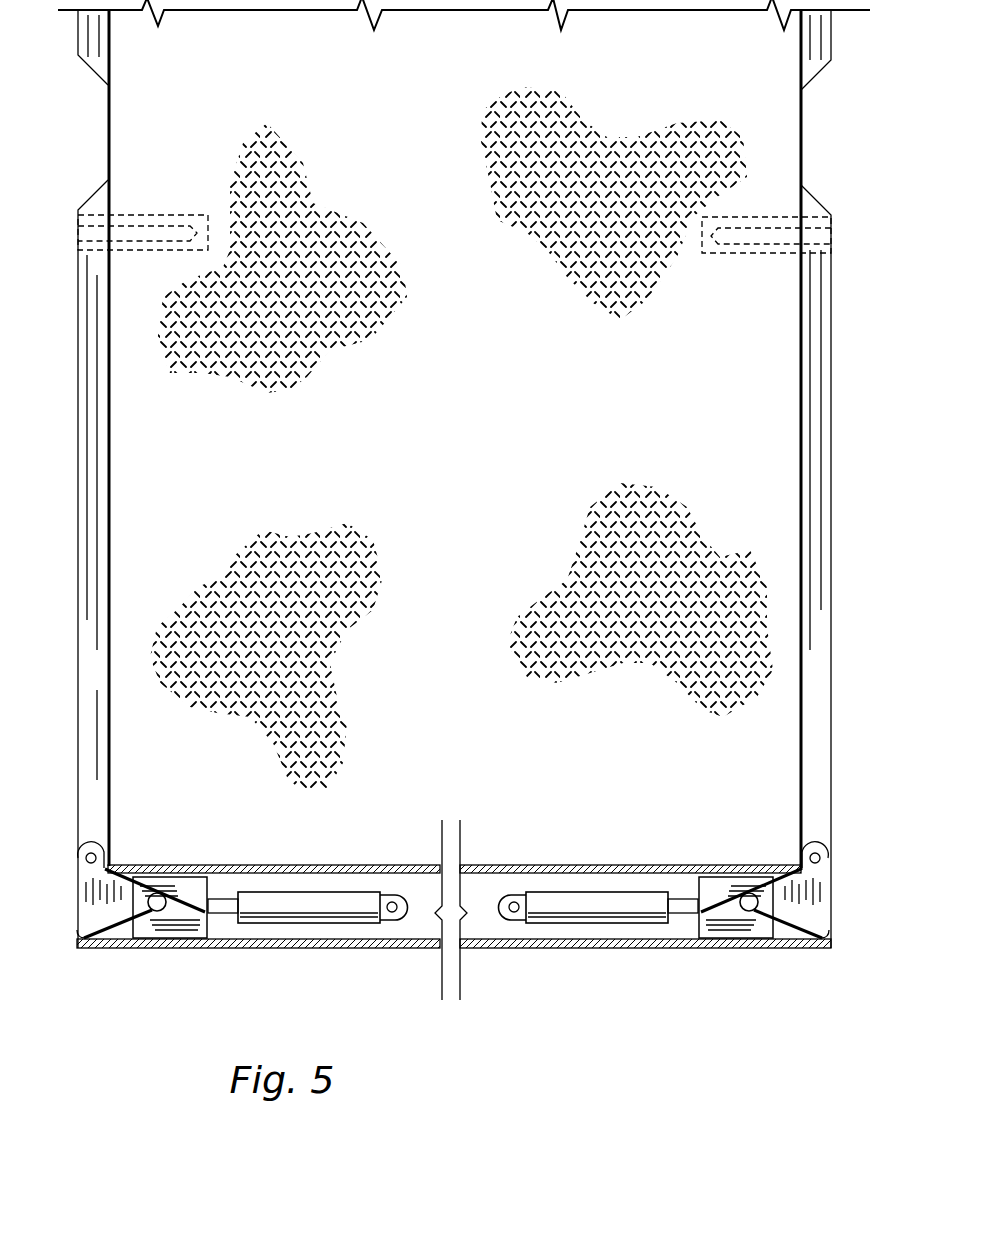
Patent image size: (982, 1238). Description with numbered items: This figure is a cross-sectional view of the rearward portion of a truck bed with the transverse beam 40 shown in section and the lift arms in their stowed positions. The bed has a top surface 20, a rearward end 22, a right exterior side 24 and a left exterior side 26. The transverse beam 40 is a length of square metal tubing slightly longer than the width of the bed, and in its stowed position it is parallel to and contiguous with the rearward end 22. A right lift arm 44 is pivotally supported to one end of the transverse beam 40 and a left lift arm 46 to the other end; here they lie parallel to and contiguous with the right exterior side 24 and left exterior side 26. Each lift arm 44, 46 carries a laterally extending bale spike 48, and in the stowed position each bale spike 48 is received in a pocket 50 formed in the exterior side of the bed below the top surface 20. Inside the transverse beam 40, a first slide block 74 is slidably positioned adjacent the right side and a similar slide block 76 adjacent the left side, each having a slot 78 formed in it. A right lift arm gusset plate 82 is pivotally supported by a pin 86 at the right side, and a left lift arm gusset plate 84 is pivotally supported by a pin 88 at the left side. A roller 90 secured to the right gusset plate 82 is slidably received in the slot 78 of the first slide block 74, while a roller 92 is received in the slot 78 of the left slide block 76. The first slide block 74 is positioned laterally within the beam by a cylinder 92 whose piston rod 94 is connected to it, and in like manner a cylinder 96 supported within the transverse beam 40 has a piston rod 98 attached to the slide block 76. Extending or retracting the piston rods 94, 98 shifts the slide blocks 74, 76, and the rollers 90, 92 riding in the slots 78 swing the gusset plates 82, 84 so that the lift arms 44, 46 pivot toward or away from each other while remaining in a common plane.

The top surface 20 is at (458, 431).
The rearward end 22 is at (394, 878).
The right exterior side 24 is at (804, 410).
The left exterior side 26 is at (110, 400).
The transverse beam 40 is at (364, 950).
The right lift arm 44 is at (818, 533).
The left lift arm 46 is at (88, 638).
The bale spike 48 is at (155, 225).
The pocket 50 is at (180, 214).
The first slide block 74 is at (745, 932).
The slide block 76 is at (163, 932).
The slot 78 is at (180, 898).
The right lift arm gusset plate 82 is at (812, 920).
The left lift arm gusset plate 84 is at (95, 915).
The pin 86 is at (820, 861).
The pin 88 is at (86, 857).
The roller 90 is at (744, 893).
The roller / cylinder 92 is at (156, 894).
The piston rod 94 is at (682, 903).
The cylinder 96 is at (312, 903).
The piston rod 98 is at (219, 903).